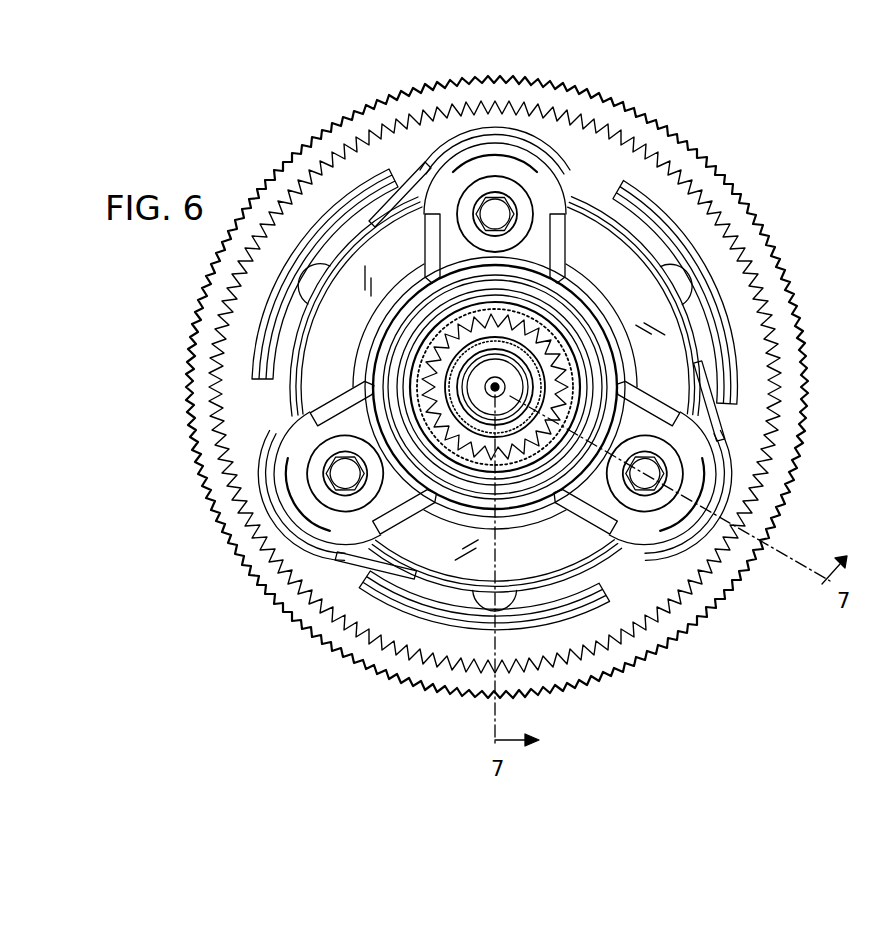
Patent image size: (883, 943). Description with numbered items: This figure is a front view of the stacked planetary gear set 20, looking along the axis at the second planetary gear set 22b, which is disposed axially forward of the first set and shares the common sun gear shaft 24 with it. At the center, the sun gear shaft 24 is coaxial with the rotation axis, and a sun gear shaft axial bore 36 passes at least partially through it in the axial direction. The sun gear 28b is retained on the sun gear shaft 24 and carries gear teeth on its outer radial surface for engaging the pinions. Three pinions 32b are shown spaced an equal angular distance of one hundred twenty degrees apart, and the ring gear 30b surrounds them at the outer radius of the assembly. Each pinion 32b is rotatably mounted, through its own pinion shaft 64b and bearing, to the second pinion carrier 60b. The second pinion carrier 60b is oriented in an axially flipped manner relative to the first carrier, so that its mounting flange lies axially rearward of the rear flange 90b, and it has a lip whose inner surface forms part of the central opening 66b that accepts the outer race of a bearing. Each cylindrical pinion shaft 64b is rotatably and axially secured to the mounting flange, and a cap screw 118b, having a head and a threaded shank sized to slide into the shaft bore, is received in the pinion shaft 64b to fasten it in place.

The stacked planetary gear set 20 is at (80, 468).
The second planetary gear set 22b is at (188, 538).
The sun gear shaft 24 is at (493, 363).
The sun gear 28b is at (574, 396).
The ring gear 30b is at (206, 312).
The pinion 32b is at (420, 143).
The sun gear shaft axial bore 36 is at (497, 387).
The second pinion carrier 60b is at (427, 545).
The pinion shaft 64b is at (490, 185).
The opening 66b is at (412, 403).
The rear flange 90b is at (590, 230).
The cap screw 118b is at (497, 213).